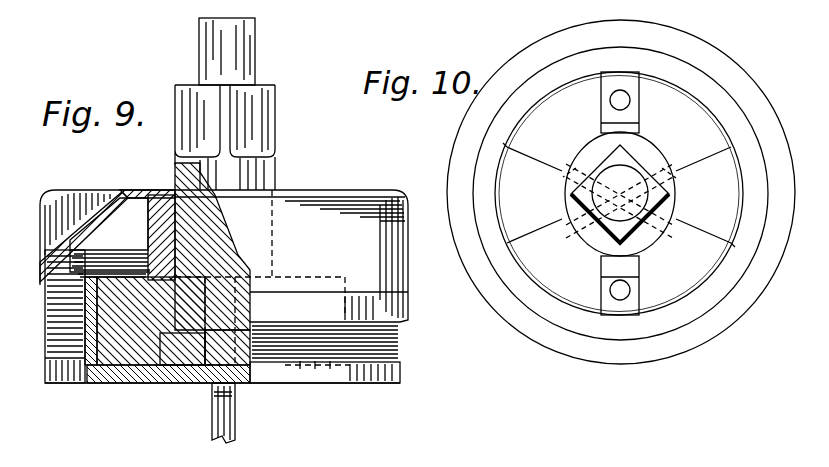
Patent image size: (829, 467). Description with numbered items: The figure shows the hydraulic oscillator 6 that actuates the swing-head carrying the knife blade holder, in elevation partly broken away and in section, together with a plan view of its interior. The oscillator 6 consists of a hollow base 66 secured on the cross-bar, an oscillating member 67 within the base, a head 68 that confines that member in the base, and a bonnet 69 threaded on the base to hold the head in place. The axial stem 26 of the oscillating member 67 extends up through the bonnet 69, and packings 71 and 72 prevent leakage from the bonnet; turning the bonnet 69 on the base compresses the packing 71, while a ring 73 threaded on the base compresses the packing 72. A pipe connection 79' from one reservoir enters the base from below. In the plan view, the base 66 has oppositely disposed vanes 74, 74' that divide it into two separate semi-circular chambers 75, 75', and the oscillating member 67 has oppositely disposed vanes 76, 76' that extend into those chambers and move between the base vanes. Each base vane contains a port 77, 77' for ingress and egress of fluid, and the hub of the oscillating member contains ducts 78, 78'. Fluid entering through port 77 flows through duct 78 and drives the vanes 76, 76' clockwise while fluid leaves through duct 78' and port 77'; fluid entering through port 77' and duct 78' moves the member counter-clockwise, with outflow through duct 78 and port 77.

In FIG. 9, the oscillator 6 is at (321, 200).
In FIG. 9, the stem 26 is at (273, 181).
In FIG. 10, the stem 26 is at (619, 194).
In FIG. 9, the hollow base 66 is at (400, 375).
In FIG. 10, the hollow base 66 is at (722, 333).
In FIG. 9, the oscillating member 67 is at (136, 357).
In FIG. 10, the oscillating member 67 is at (662, 148).
In FIG. 9, the head 68 is at (126, 252).
In FIG. 9, the bonnet 69 is at (93, 192).
In FIG. 9, the packing 71 is at (167, 194).
In FIG. 9, the packing 72 is at (45, 300).
In FIG. 9, the ring 73 is at (408, 317).
In FIG. 10, the vane 74 is at (638, 285).
In FIG. 10, the vane 74' is at (642, 102).
In FIG. 10, the semi-circular chamber 75 is at (708, 254).
In FIG. 10, the semi-circular chamber 75' is at (543, 123).
In FIG. 10, the vane 76 is at (703, 195).
In FIG. 10, the vane 76' is at (534, 195).
In FIG. 10, the port 77 is at (618, 308).
In FIG. 10, the port 77' is at (619, 81).
In FIG. 10, the duct 78 is at (685, 179).
In FIG. 10, the duct 78' is at (555, 158).
In FIG. 9, the pipe connection 79' is at (244, 413).